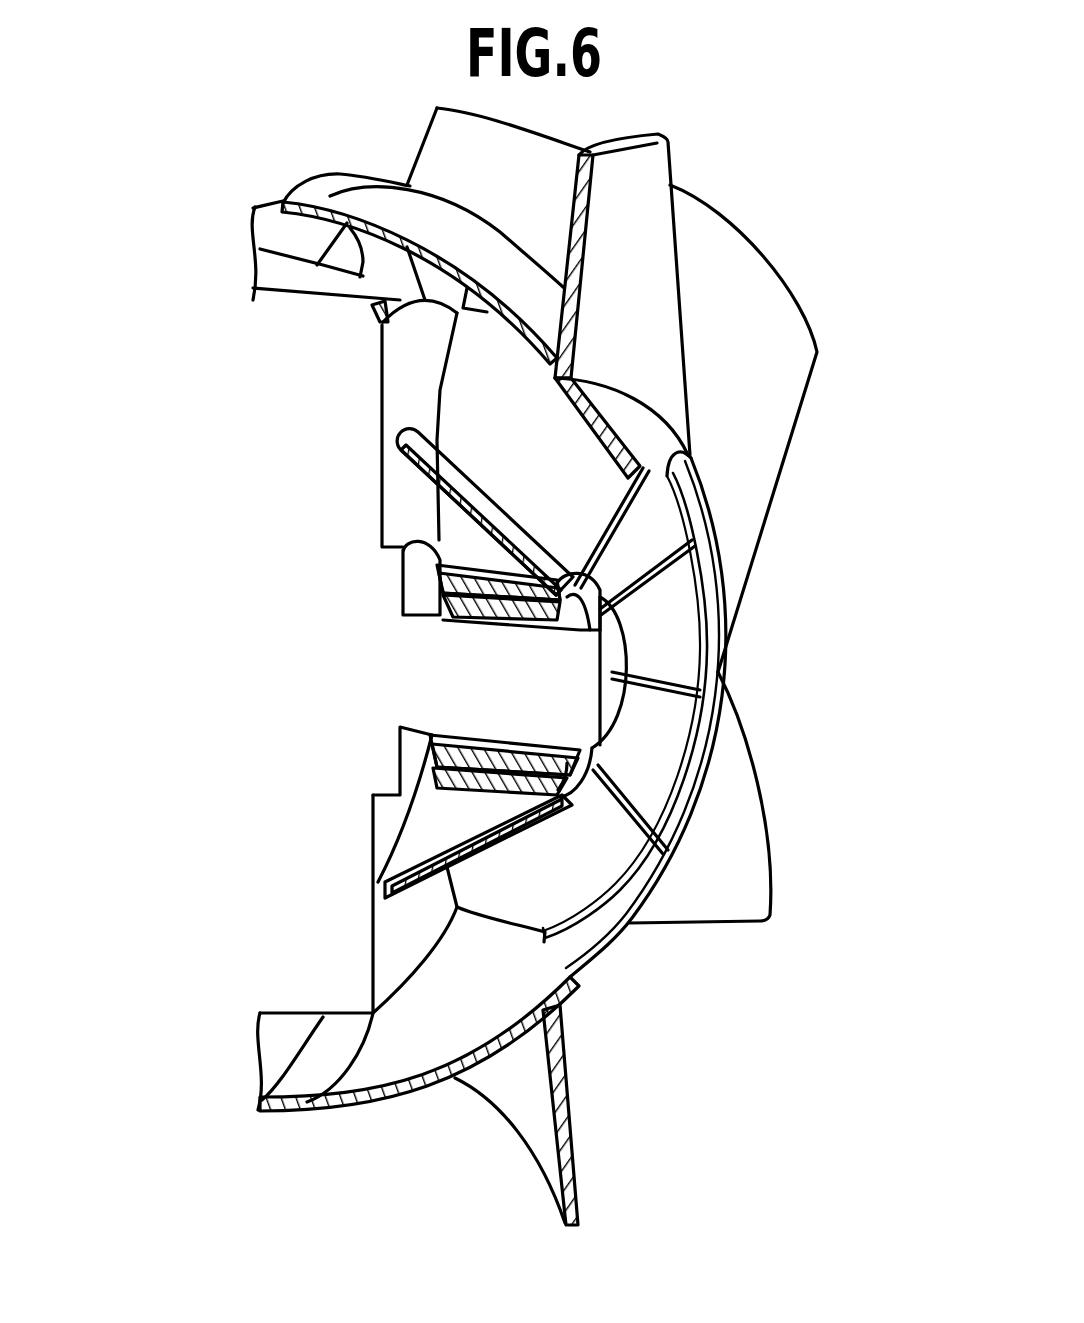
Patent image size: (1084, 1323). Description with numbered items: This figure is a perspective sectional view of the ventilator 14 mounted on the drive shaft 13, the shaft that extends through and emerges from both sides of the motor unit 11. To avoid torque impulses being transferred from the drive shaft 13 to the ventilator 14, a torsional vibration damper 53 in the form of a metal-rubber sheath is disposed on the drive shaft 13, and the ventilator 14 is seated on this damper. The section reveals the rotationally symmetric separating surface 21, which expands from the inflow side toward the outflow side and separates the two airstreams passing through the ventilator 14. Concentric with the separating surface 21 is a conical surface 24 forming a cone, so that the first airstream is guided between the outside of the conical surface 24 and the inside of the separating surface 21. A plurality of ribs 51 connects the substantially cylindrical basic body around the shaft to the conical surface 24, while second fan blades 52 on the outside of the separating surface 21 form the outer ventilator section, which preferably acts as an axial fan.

The motor unit 11 is at (204, 385).
The drive shaft 13 is at (430, 689).
The ventilator 14 is at (790, 577).
The separating surface 21 is at (382, 1068).
The conical surface 24 is at (416, 450).
The ribs 51 is at (570, 900).
The second fan blades 52 is at (567, 1142).
The torsional vibration damper 53 is at (443, 620).